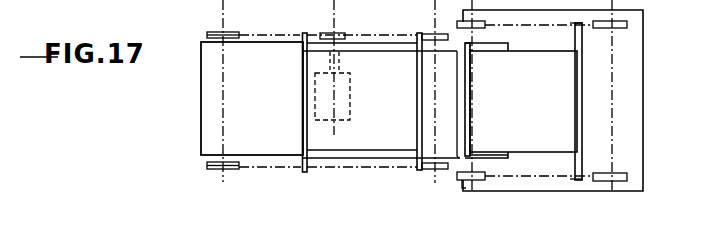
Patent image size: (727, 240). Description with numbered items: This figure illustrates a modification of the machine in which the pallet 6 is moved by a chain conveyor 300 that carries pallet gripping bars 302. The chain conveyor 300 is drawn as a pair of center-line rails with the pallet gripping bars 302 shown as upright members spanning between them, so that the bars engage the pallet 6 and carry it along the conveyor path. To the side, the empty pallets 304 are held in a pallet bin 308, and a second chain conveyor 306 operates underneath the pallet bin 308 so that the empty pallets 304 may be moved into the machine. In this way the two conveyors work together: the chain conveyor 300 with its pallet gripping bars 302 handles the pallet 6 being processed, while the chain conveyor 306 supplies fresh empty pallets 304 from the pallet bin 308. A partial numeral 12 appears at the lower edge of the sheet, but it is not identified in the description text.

The chain conveyor 300 is at (291, 34).
The pallet gripping bars 302 is at (302, 108).
The pallet 6 is at (375, 53).
The empty pallets 304 is at (526, 101).
The pallet bin 308 is at (508, 45).
The chain conveyor 306 is at (537, 179).
The housing 12 is at (11, 237).